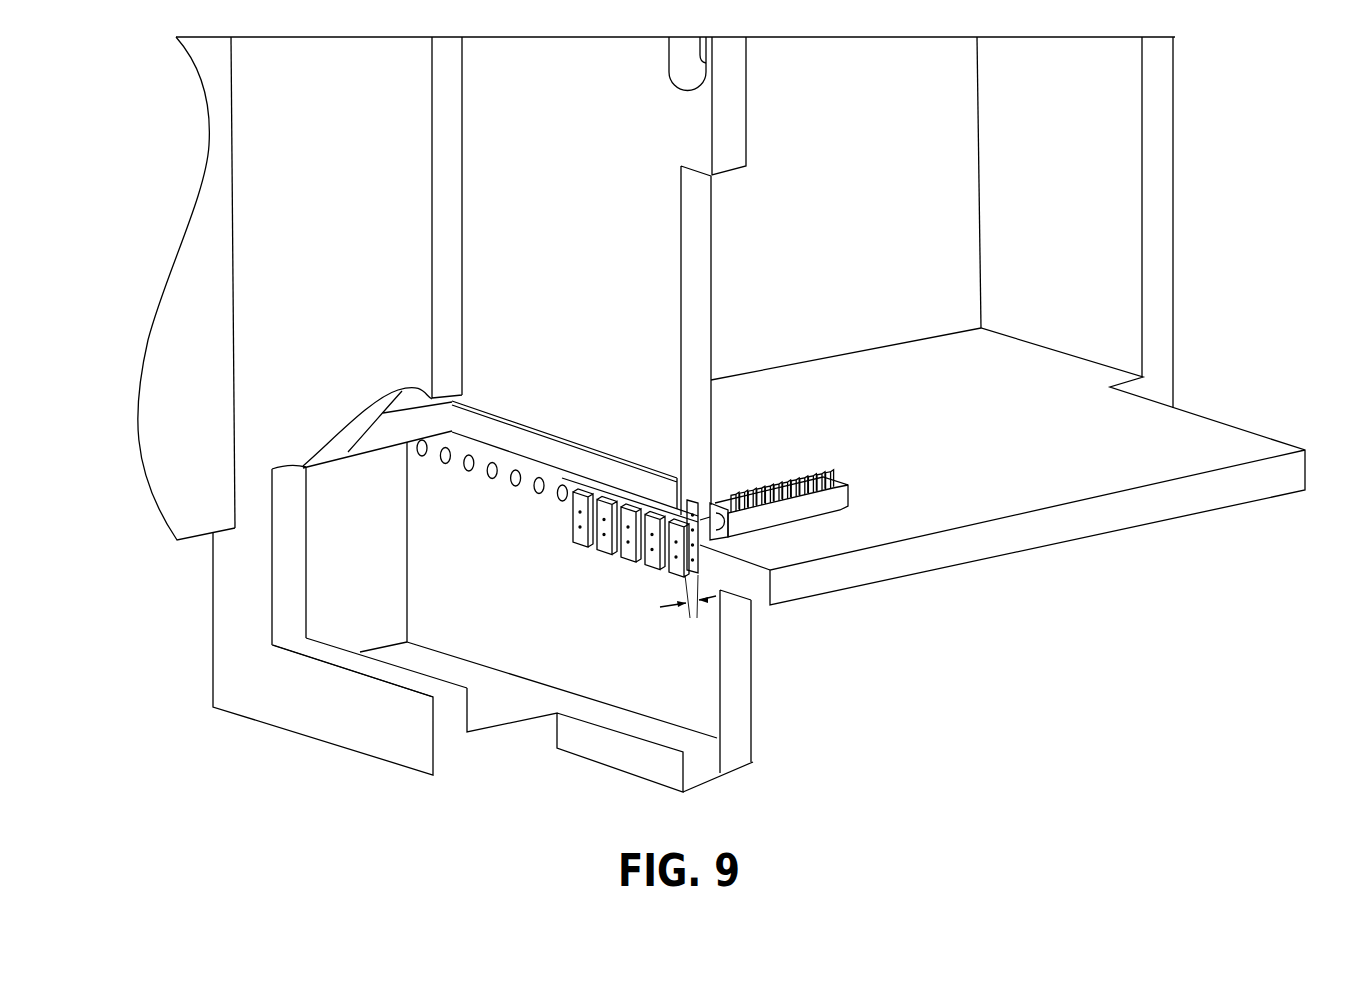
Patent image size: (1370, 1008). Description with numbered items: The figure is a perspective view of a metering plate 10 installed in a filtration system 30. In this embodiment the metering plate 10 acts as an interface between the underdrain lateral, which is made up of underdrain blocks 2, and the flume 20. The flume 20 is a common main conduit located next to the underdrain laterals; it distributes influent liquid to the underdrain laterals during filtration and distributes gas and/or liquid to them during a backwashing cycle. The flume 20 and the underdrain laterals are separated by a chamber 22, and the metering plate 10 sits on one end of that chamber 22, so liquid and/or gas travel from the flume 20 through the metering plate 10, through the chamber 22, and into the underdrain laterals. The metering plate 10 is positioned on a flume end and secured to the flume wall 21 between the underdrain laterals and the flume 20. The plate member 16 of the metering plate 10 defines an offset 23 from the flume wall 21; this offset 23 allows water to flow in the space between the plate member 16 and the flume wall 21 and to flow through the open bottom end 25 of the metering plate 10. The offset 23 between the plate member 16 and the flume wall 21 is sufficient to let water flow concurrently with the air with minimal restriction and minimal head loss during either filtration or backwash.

The filtration system 30 is at (750, 363).
The flume wall 21 is at (668, 456).
The flume 20 is at (461, 601).
The plate member 16 is at (575, 532).
The metering plate 10 is at (597, 557).
The bottom end 25 is at (678, 574).
The offset 23 is at (690, 606).
The chamber 22 is at (705, 545).
The underdrain block 2 is at (850, 497).